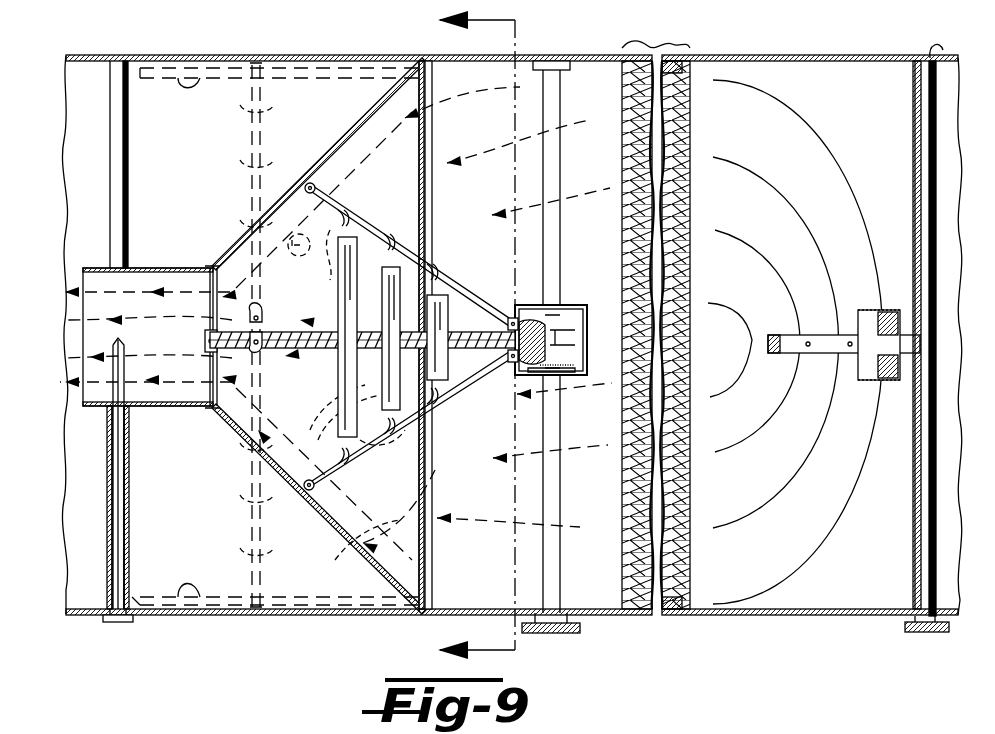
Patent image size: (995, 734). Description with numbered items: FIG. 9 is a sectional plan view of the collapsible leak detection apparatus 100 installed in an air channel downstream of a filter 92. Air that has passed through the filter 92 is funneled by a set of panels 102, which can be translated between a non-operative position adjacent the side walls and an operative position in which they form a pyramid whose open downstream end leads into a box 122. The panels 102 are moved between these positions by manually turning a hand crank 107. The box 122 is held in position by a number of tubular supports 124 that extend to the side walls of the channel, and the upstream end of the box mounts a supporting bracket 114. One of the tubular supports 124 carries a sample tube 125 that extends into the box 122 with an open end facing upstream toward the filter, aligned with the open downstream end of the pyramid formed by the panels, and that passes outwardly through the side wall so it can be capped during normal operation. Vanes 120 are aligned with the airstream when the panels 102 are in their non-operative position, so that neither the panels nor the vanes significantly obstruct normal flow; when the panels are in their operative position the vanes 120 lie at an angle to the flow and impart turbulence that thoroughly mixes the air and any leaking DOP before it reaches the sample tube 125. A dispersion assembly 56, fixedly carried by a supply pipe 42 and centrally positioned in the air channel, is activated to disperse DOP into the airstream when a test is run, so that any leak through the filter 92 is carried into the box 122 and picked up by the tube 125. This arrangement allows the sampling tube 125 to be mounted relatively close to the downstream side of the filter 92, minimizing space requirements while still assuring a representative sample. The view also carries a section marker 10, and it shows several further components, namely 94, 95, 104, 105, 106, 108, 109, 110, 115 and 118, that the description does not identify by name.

The section line 10- 10 is at (503, 344).
The supply pipe 42 is at (905, 544).
The dispersion assembly 56 is at (886, 305).
The filter 92 is at (690, 128).
The top wall 94 is at (796, 60).
The chamber 95 is at (868, 161).
The collapsible leak detection apparatus 100 is at (318, 598).
The panels 102 is at (175, 65).
The partition wall 104 is at (427, 60).
The gear box 105 is at (587, 305).
The vertical shaft 106 is at (585, 440).
The hand crank 107 is at (572, 633).
The bearing 108 is at (585, 373).
The support struts 109 is at (515, 290).
The auger 110 is at (305, 352).
The supporting bracket 114 is at (205, 340).
The paddles 115 is at (300, 298).
The chains 118 is at (262, 102).
The vanes 120 is at (240, 150).
The box 122 is at (210, 265).
The tubular supports 124 is at (115, 156).
The sample tube 125 is at (130, 378).